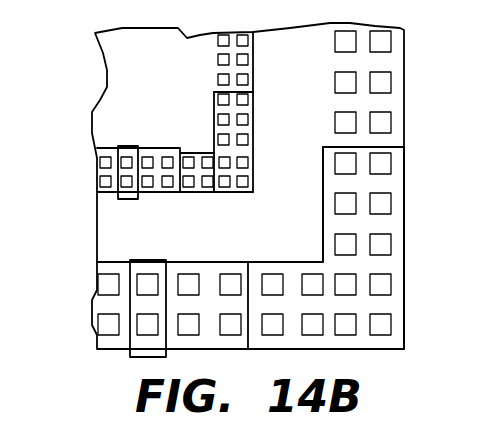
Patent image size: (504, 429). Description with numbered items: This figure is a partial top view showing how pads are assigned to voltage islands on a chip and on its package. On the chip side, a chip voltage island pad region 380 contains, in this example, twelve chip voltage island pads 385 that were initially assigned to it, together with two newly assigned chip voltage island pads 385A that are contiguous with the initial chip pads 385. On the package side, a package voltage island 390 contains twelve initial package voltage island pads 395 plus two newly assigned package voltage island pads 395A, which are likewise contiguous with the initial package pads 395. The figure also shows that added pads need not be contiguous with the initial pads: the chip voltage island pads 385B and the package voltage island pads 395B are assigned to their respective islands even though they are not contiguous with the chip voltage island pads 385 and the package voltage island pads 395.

The chip voltage island 380 is at (214, 124).
The chip pads 385 is at (241, 162).
The added chip voltage island pads 385A is at (270, 87).
The chip voltage island pads 385B is at (125, 162).
The package voltage island 390 is at (405, 257).
The package pads 395 is at (383, 327).
The added package voltage island pads 395A is at (347, 160).
The package voltage island pads 395B is at (147, 285).